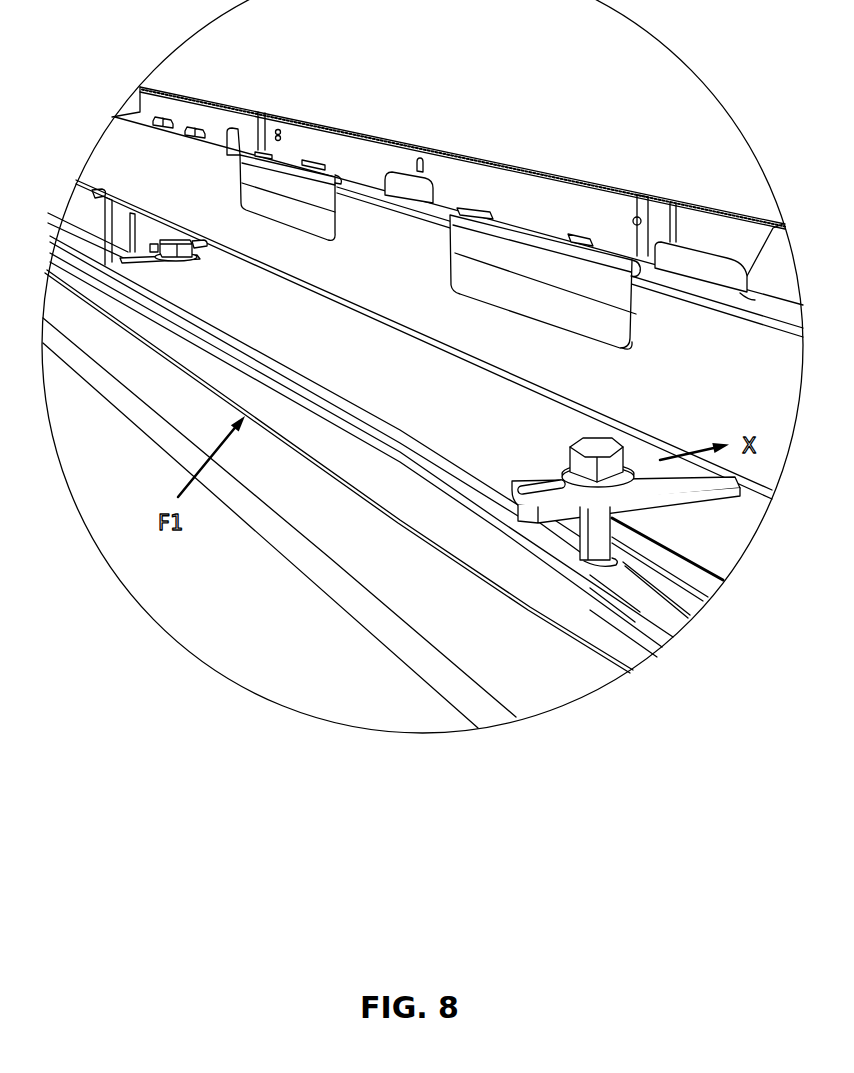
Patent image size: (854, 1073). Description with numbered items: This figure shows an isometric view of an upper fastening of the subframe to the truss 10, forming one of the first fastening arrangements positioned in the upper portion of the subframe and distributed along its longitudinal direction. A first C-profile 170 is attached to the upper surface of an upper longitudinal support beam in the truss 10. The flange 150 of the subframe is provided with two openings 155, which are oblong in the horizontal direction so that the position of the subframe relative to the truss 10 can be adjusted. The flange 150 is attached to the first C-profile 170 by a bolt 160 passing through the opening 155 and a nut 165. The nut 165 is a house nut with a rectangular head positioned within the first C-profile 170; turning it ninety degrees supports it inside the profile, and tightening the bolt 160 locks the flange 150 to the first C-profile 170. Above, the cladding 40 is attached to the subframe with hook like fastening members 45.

The truss 10 is at (351, 523).
The cladding 40 is at (590, 182).
The hook like fastening members 45 is at (511, 233).
The flange 150 is at (381, 362).
The openings 155 is at (540, 482).
The bolt 160 is at (197, 260).
The nut 165 is at (617, 567).
The first C-profile 170 is at (699, 573).